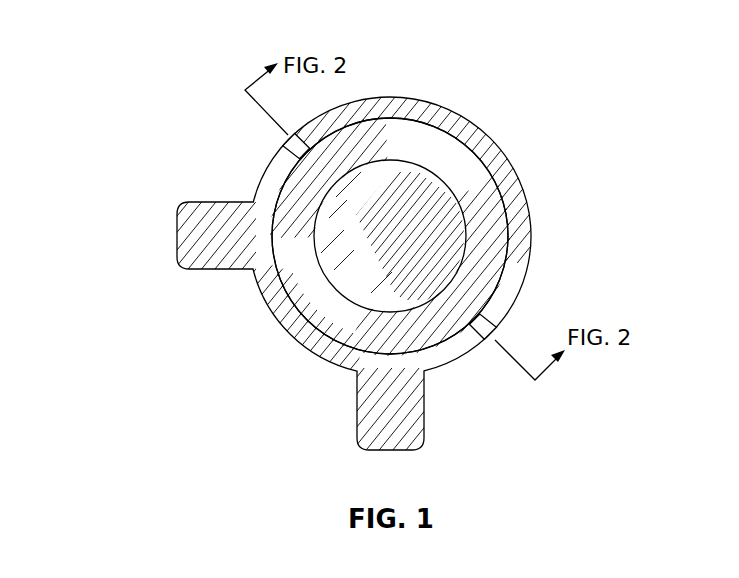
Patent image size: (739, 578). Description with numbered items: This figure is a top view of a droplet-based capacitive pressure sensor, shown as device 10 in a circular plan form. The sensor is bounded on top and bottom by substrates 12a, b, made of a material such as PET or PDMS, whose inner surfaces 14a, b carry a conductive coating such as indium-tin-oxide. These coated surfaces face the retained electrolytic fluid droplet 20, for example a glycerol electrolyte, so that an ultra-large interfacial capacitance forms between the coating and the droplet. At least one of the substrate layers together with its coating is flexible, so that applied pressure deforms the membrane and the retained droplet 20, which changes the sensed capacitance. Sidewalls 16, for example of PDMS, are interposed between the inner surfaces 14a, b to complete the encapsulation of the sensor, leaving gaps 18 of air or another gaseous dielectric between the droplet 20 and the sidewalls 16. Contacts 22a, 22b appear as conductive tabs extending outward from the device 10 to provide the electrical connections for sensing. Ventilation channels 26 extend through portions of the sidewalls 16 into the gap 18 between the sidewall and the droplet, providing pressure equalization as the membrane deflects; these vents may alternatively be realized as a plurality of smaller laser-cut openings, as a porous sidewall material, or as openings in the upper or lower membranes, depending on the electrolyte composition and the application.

The device 10 is at (177, 98).
The top and bottom substrates 12a, b is at (511, 168).
The inner surfaces 14a, b is at (529, 249).
The sidewalls 16 is at (443, 355).
The gaps 18 is at (330, 313).
The electrolytic fluid droplet 20 is at (391, 161).
The contact 22a is at (178, 222).
The contact 22b is at (373, 448).
The ventilation channels 26 is at (288, 149).